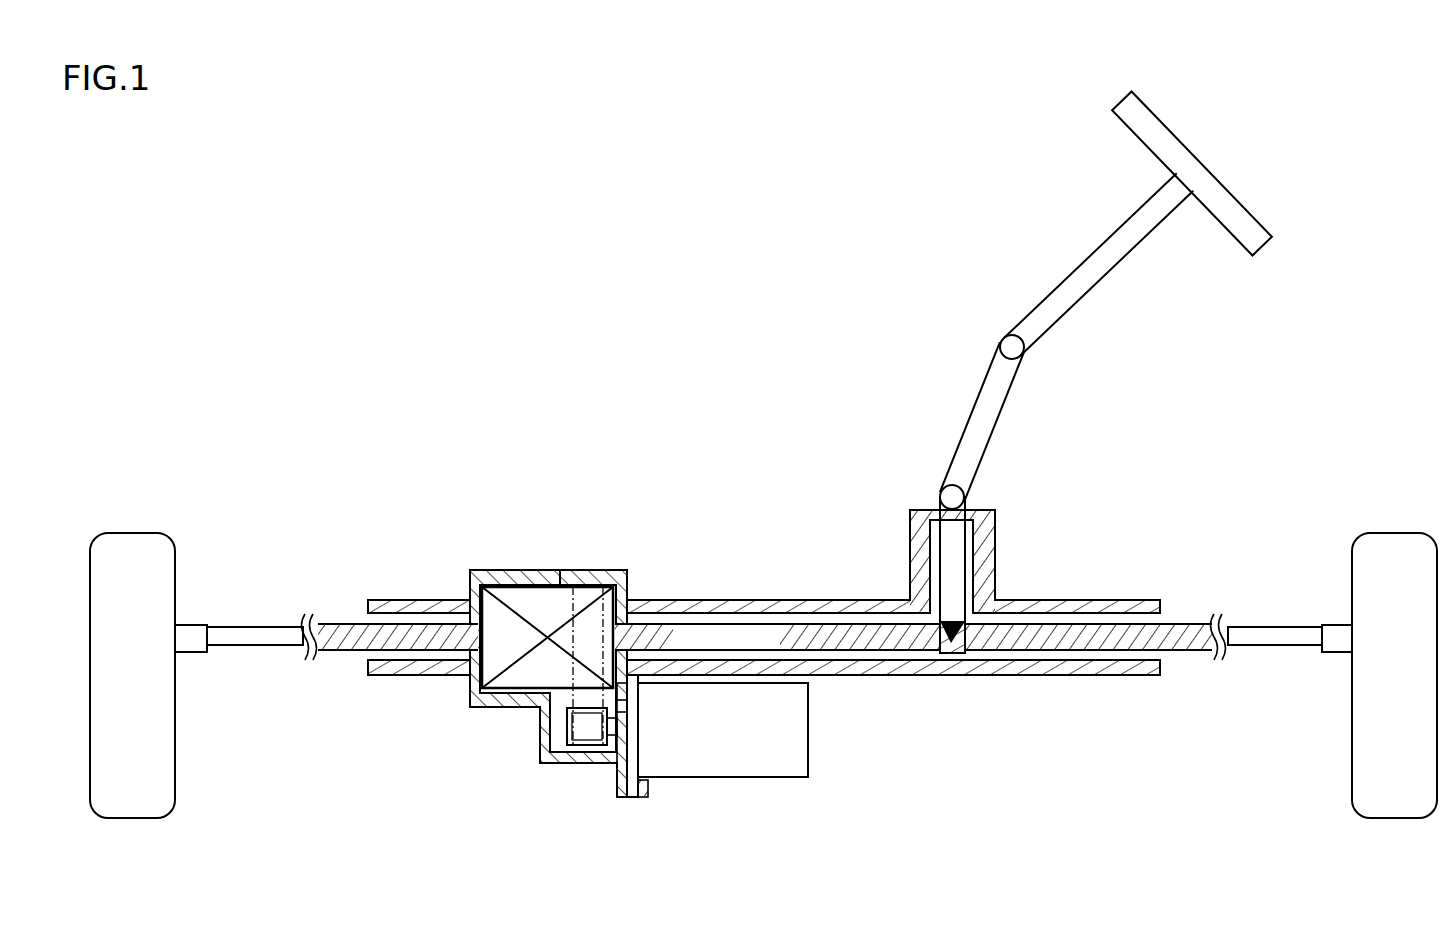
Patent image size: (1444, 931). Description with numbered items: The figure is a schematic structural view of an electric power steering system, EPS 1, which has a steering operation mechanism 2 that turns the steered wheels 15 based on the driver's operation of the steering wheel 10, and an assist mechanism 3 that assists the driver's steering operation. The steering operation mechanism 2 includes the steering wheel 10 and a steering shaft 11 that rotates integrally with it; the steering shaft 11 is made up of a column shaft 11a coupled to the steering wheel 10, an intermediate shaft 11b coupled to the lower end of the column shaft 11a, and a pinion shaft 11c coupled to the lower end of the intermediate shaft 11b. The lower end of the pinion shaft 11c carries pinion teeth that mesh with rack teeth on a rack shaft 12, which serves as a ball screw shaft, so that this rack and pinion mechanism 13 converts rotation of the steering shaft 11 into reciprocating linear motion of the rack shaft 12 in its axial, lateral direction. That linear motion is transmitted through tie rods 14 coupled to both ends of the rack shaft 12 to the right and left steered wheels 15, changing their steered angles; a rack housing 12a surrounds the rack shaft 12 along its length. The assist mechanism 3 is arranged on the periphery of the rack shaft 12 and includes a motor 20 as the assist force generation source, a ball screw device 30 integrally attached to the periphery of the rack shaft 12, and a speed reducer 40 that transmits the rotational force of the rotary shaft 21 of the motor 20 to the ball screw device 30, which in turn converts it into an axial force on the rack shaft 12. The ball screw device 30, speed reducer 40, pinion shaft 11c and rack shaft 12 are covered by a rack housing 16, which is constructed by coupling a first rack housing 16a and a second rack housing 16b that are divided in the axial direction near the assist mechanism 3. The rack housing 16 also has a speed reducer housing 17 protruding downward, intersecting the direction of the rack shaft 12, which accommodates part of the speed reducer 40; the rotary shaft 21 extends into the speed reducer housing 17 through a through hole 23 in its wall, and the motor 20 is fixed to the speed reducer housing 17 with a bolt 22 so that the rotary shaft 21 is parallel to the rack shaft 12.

The EPS 1 is at (776, 240).
The steering operation mechanism 2 is at (1216, 327).
The assist mechanism 3 is at (642, 565).
The steering wheel 10 is at (1168, 120).
The steering shaft 11 is at (963, 293).
The column shaft 11a is at (1010, 334).
The intermediate shaft 11b is at (970, 408).
The pinion shaft 11c is at (928, 530).
The rack shaft 12 is at (832, 655).
The rack housing 12a is at (426, 630).
The rack and pinion mechanism 13 is at (958, 655).
The tie rod 14 is at (263, 646).
The steered wheel 15 is at (138, 533).
The rack housing 16 is at (554, 631).
The first rack housing 16a is at (540, 575).
The second rack housing 16b is at (599, 653).
The speed reducer housing 17 is at (540, 765).
The motor 20 is at (722, 780).
The rotary shaft 21 is at (628, 746).
The bolt 22 is at (645, 788).
The through hole 23 is at (622, 707).
The ball screw device 30 is at (478, 669).
The speed reducer 40 is at (565, 693).